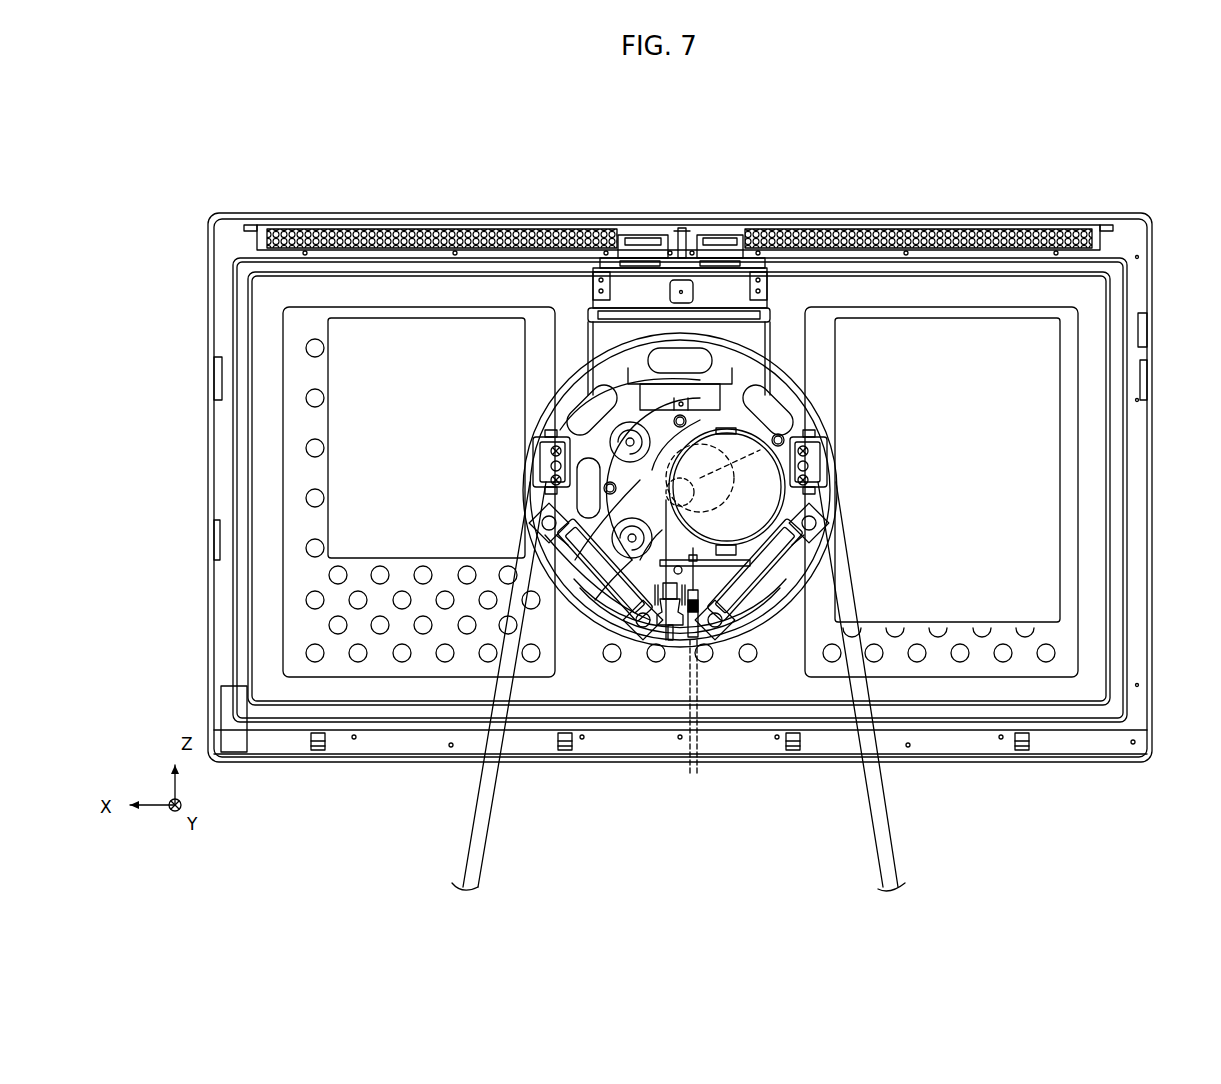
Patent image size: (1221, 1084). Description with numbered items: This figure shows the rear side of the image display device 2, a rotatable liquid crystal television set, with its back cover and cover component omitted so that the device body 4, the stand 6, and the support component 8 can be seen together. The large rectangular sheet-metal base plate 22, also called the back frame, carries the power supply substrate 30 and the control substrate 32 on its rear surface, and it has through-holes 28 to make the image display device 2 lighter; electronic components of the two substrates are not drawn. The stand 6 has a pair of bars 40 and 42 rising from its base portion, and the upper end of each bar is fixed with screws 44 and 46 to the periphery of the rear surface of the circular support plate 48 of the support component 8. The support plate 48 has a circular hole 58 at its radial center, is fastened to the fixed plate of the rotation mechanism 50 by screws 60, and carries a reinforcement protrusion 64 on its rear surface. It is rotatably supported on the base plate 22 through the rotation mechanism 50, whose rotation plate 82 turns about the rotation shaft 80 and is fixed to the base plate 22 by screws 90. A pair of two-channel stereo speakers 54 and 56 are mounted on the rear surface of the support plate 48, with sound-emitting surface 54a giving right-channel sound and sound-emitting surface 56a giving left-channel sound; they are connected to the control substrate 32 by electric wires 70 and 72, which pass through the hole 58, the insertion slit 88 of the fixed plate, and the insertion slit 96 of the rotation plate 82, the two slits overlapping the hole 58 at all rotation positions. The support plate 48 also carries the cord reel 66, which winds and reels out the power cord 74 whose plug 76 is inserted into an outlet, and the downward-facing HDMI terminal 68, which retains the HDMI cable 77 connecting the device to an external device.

The image display device 2 is at (1124, 192).
The device body 4 is at (1161, 240).
The stand 6 is at (896, 846).
The support component 8 is at (840, 440).
The base plate 22 is at (1090, 679).
The through-holes 28 is at (1008, 661).
The power supply substrate 30 is at (1045, 471).
The control substrate 32 is at (348, 418).
The bar 40 is at (884, 803).
The bar 42 is at (470, 810).
The screw 44 is at (814, 452).
The screw 46 is at (545, 478).
The support plate 48 is at (728, 365).
The rotation mechanism 50 is at (640, 560).
The speaker 54 is at (575, 545).
The sound-emitting surface 54a is at (566, 552).
The speaker 56 is at (792, 553).
The sound-emitting surface 56a is at (796, 576).
The hole 58 is at (620, 400).
The screws 60 is at (676, 421).
The reinforcement protrusion 64 is at (640, 392).
The cord reel 66 is at (786, 497).
The HDMI terminal 68 is at (700, 640).
The electric wire 70 is at (612, 520).
The electric wire 72 is at (612, 442).
The power cord 74 is at (660, 600).
The plug 76 is at (670, 645).
The HDMI cable 77 is at (690, 775).
The rotation shaft 80 is at (742, 505).
The rotation plate 82 is at (625, 560).
The insertion slit 88 is at (637, 413).
The screws 90 is at (600, 600).
The insertion slit 96 is at (802, 405).